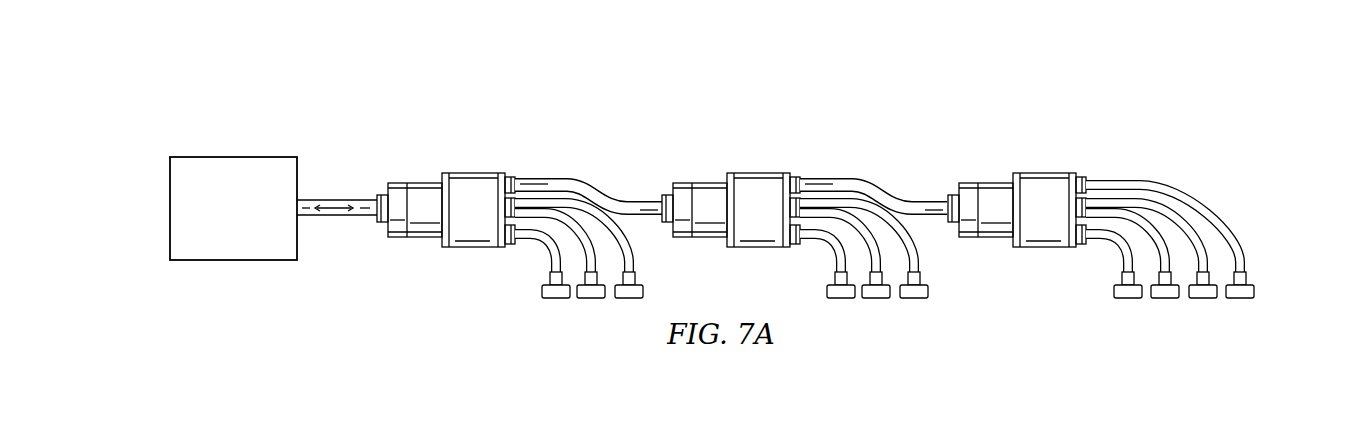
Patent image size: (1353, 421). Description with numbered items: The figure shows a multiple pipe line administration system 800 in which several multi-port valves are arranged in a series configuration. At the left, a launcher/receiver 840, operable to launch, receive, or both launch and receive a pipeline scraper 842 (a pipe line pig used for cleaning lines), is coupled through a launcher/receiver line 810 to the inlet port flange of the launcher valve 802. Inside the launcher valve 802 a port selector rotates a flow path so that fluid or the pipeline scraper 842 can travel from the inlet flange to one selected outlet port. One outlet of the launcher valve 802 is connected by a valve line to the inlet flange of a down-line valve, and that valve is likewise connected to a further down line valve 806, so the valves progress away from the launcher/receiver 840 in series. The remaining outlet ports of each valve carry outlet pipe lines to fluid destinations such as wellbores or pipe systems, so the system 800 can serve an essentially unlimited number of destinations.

The system 800 is at (1272, 182).
The launcher valve 802 is at (495, 103).
The down line valve 806 is at (1075, 103).
The launcher/receiver line 810 is at (347, 200).
The launcher/receiver 840 is at (232, 157).
The pipeline scraper 842 is at (336, 216).